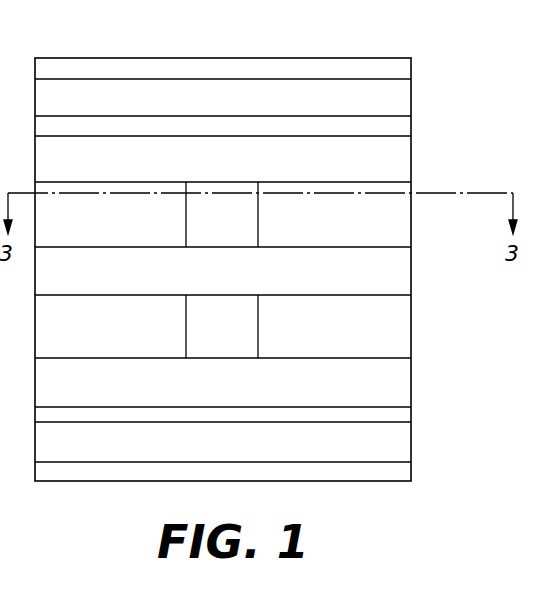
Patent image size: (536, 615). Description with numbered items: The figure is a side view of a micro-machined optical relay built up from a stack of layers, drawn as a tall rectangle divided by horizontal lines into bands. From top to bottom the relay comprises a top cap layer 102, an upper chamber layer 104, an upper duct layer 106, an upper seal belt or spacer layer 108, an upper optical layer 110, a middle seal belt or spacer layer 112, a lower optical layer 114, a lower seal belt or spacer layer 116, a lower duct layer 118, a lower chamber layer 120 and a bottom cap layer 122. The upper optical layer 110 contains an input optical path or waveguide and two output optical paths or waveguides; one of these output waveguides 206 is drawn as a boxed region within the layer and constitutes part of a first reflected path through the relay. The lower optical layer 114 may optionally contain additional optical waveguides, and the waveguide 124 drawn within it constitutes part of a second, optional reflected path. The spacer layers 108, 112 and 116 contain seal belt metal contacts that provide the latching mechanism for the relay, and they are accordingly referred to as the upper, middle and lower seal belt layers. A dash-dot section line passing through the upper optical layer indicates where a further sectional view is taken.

The top cap layer 102 is at (358, 57).
The upper chamber layer 104 is at (411, 84).
The upper duct layer 106 is at (411, 125).
The upper seal belt layer 108 is at (411, 160).
The upper optical layer 110 is at (411, 235).
The middle seal belt layer 112 is at (411, 273).
The lower optical layer 114 is at (411, 317).
The lower seal belt layer 116 is at (411, 372).
The lower duct layer 118 is at (411, 410).
The lower chamber layer 120 is at (411, 448).
The bottom cap layer 122 is at (428, 472).
The waveguide 124 is at (213, 318).
The output waveguide 206 is at (213, 216).